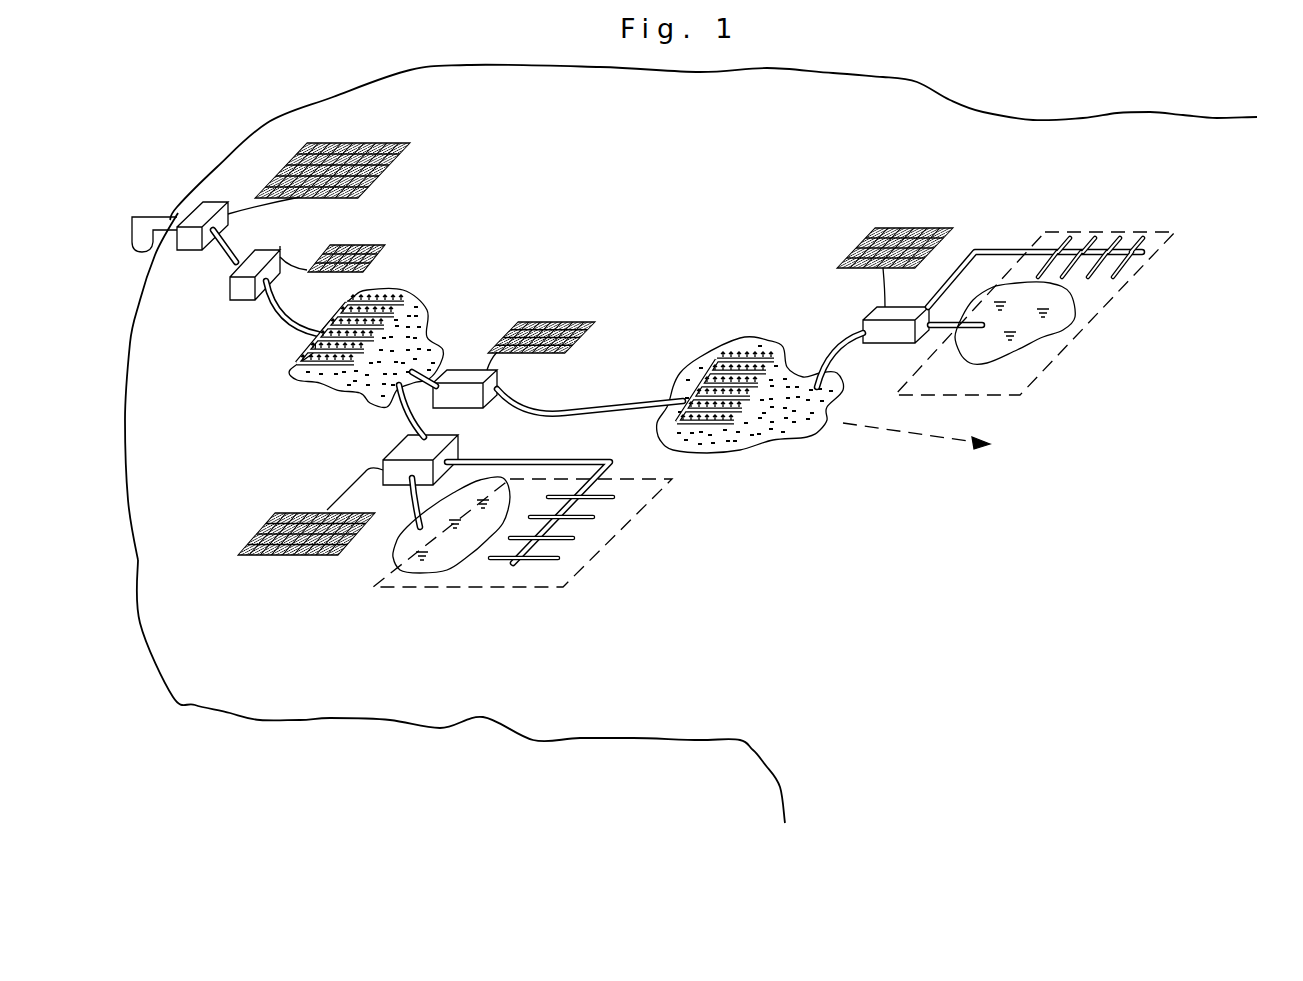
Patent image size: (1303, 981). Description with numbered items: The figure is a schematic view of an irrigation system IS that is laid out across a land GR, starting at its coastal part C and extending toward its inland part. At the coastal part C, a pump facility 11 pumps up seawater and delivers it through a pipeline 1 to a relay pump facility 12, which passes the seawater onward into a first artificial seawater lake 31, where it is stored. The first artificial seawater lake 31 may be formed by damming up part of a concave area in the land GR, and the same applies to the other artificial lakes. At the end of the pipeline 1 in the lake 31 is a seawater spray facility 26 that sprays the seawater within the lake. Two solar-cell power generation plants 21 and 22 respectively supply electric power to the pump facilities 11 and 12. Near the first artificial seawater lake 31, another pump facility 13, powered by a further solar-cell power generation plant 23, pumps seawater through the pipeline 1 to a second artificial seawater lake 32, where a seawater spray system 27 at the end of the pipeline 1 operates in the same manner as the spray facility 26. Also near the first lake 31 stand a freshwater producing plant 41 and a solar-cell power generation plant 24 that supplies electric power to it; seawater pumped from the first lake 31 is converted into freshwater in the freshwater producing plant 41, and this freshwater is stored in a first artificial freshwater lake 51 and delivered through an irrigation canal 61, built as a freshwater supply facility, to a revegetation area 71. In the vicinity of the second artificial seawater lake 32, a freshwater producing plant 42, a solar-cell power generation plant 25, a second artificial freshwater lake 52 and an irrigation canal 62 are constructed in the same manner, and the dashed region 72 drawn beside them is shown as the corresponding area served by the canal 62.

The pipeline 1 is at (233, 233).
The pump facility 11 is at (192, 248).
The relay pump facility 12 is at (243, 297).
The pump facility 13 is at (455, 398).
The solar-cell power generation plant 21 is at (393, 163).
The solar-cell power generation plant 22 is at (383, 247).
The solar-cell power generation plant 23 is at (560, 323).
The solar-cell power generation plant 24 is at (268, 512).
The solar-cell power generation plant 25 is at (922, 228).
The seawater spray facility 26 is at (290, 356).
The seawater spray system 27 is at (713, 358).
The first artificial seawater lake 31 is at (368, 410).
The second artificial seawater lake 32 is at (827, 420).
The freshwater producing plant 41 is at (400, 450).
The freshwater producing plant 42 is at (887, 343).
The first artificial freshwater lake 51 is at (450, 563).
The second artificial freshwater lake 52 is at (1057, 330).
The irrigation canal 61 is at (593, 517).
The irrigation canal 62 is at (1140, 255).
The revegetation area 71 is at (587, 565).
The greening area 72 is at (1003, 398).
The coastal part C is at (280, 110).
The irrigation system IS is at (647, 186).
The land GR is at (1065, 175).